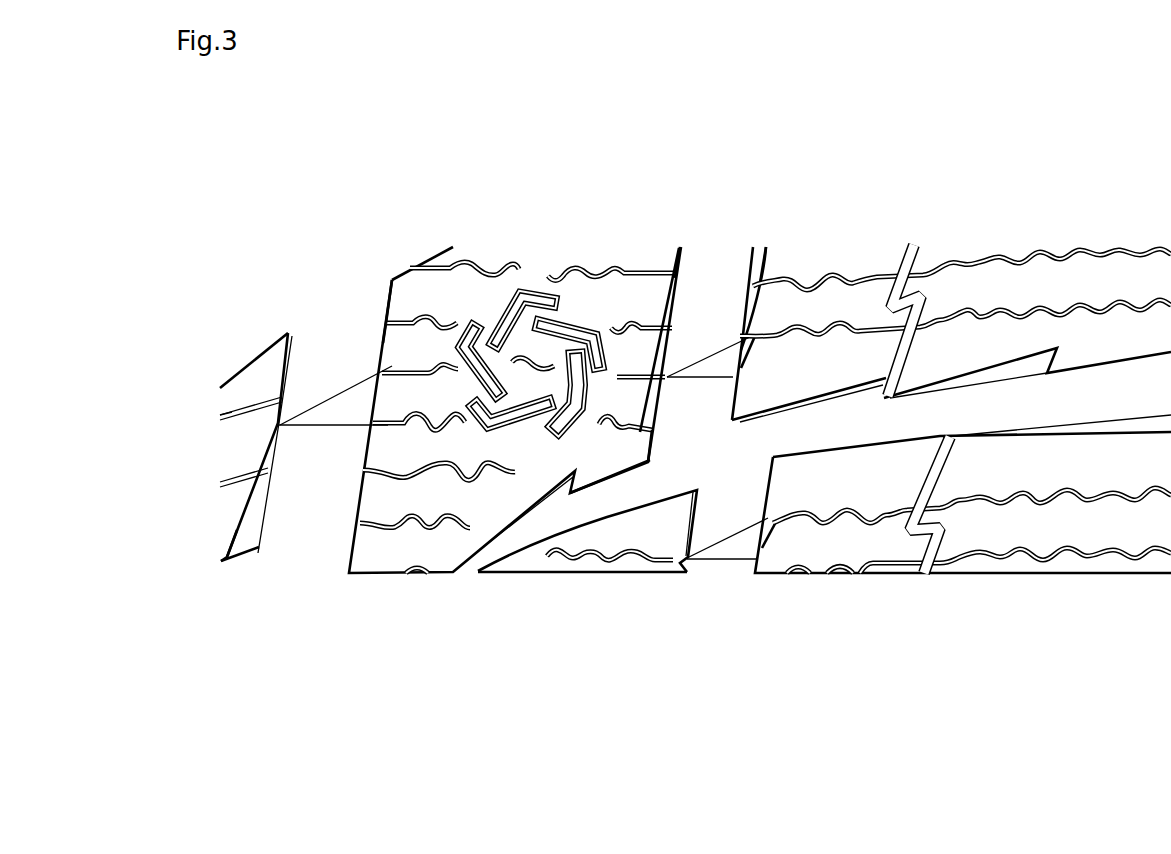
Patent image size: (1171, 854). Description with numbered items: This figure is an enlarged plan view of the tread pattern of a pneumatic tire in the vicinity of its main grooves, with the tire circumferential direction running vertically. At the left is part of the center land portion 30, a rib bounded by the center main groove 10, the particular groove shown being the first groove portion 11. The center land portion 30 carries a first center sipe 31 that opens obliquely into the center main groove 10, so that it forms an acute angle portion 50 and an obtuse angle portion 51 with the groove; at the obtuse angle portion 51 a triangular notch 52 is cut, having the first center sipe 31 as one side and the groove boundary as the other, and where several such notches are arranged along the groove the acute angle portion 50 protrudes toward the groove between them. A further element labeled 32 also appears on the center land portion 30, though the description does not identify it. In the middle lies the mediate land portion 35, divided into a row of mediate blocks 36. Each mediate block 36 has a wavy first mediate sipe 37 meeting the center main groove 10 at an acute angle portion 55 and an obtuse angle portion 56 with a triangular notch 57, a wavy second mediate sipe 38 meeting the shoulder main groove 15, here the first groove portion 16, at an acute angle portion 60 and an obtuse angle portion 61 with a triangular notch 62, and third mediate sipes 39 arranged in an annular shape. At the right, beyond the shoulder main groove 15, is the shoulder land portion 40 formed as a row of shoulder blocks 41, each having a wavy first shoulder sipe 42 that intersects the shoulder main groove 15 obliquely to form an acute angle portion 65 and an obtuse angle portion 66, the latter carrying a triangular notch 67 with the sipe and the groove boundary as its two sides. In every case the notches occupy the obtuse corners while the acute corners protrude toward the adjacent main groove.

The center main groove 10 is at (289, 477).
The first groove portion 11 is at (289, 477).
The shoulder main groove 15 is at (824, 426).
The first groove portion 16 is at (824, 426).
The center land portion 30 is at (277, 332).
The first center sipe 31 is at (233, 413).
The lead wires 32 is at (227, 442).
The mediate land portion 35 is at (501, 371).
The mediate block 36 is at (416, 292).
The first mediate sipe 37 is at (376, 476).
The second mediate sipe 38 is at (635, 328).
The third mediate sipe 39 is at (498, 310).
The shoulder land portion 40 is at (919, 337).
The shoulder block 41 is at (921, 366).
The first shoulder sipe 42 is at (860, 328).
The acute angle portion 50 is at (282, 410).
The obtuse angle portion 51 is at (285, 400).
The triangular notch 52 is at (257, 528).
The acute angle portion 55 is at (386, 326).
The obtuse angle portion 56 is at (386, 324).
The triangular notch 57 is at (383, 387).
The acute angle portion 60 is at (672, 268).
The obtuse angle portion 61 is at (685, 262).
The triangular notch 62 is at (652, 420).
The acute angle portion 65 is at (753, 287).
The obtuse angle portion 66 is at (741, 289).
The triangular notch 67 is at (740, 343).